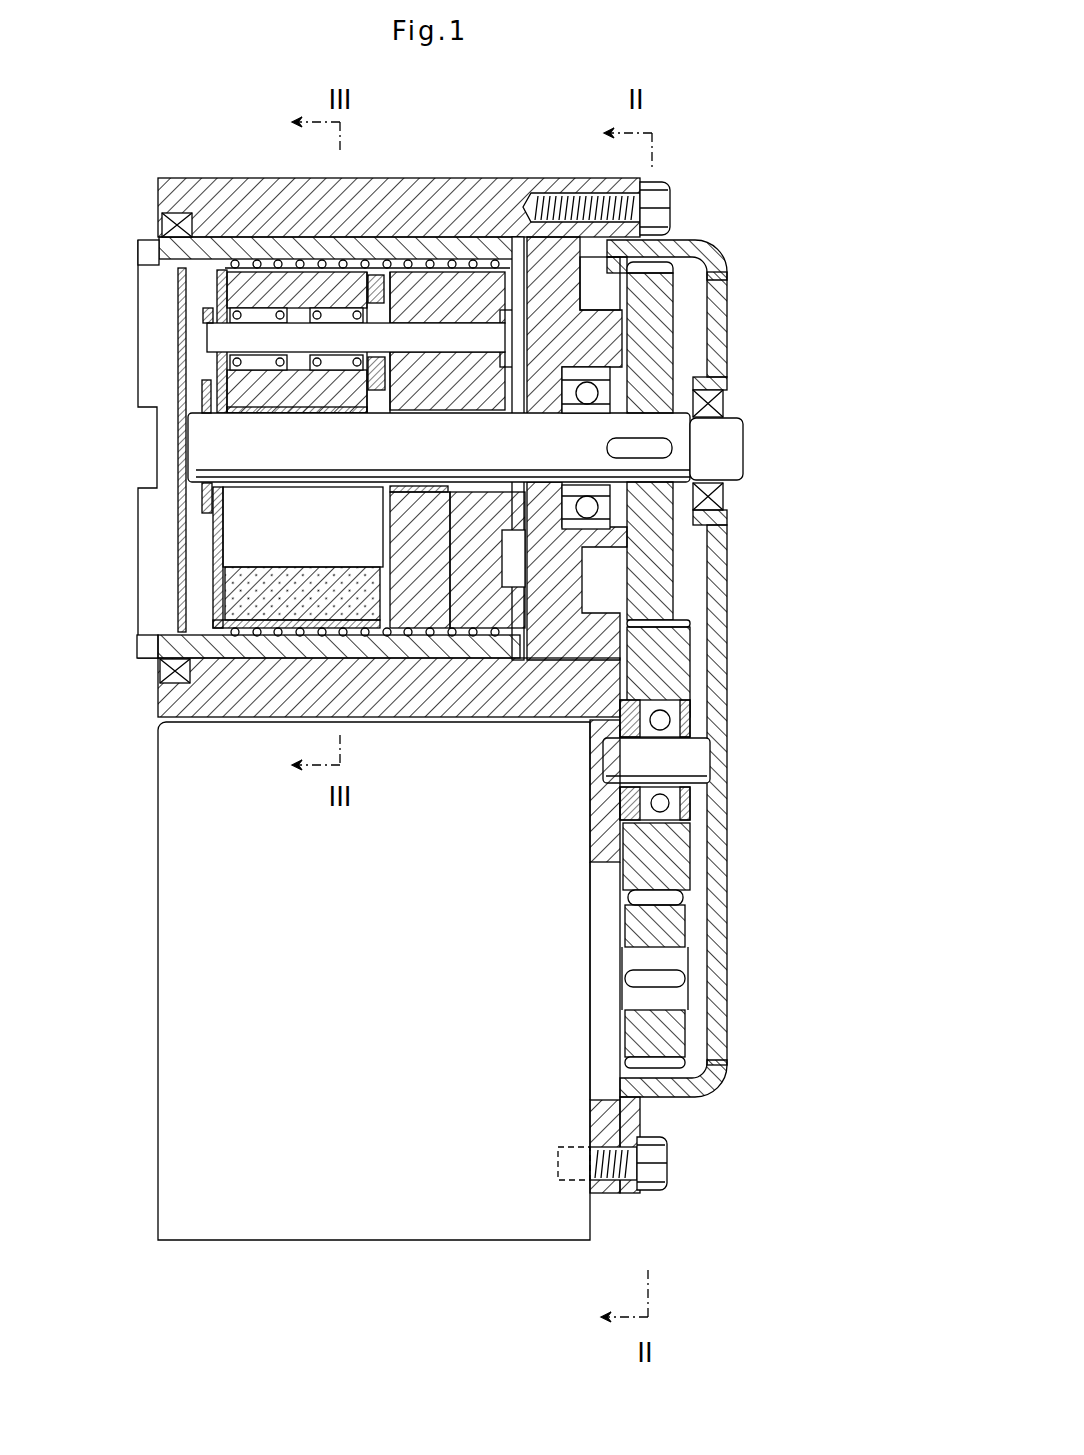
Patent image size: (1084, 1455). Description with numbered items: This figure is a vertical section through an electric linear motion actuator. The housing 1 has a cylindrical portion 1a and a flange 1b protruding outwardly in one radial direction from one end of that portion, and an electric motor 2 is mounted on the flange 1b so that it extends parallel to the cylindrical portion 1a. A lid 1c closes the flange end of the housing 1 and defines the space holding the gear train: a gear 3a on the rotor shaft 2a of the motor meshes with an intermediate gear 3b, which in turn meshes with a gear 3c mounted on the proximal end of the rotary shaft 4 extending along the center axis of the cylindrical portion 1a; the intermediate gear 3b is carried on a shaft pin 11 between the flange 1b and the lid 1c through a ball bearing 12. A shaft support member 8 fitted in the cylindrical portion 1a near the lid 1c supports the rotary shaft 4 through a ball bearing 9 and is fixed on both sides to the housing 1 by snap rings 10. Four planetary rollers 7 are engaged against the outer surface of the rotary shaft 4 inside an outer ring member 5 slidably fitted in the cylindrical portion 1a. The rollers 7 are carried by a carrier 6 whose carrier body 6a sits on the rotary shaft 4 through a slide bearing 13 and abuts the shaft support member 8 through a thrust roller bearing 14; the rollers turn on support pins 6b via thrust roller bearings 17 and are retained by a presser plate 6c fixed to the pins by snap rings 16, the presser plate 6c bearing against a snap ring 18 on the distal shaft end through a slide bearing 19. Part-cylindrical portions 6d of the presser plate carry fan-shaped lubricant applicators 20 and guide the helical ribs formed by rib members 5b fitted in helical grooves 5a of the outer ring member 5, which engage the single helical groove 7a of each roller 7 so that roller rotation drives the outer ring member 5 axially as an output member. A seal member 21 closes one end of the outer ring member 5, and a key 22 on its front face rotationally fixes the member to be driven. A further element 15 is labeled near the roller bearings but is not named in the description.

The housing 1 is at (208, 176).
The cylindrical portion 1a is at (183, 703).
The flange 1b is at (607, 828).
The lid 1c is at (715, 895).
The electric motor 2 is at (183, 1110).
The rotor shaft 2a is at (677, 963).
The gear 3a is at (668, 1035).
The intermediate gear 3b is at (660, 668).
The gear 3c is at (662, 572).
The rotary shaft 4 is at (718, 440).
The outer ring member 5 is at (205, 240).
The helical grooves 5a is at (266, 260).
The rib members 5b is at (282, 260).
The carrier 6 is at (466, 600).
The carrier body 6a is at (432, 590).
The support pins 6b is at (437, 333).
The presser plate 6c is at (226, 638).
The part-cylindrical portions 6d is at (290, 628).
The planetary rollers 7 is at (247, 274).
The helical groove 7a is at (333, 412).
The shaft support member 8 is at (663, 313).
The ball bearing 9 is at (600, 372).
The snap rings 10 is at (565, 195).
The shaft pin 11 is at (690, 762).
The ball bearing 12 is at (693, 710).
The slide bearing 13 is at (425, 592).
The thrust roller bearing 14 is at (519, 240).
The small bearing 15 is at (308, 372).
The snap rings 16 is at (215, 313).
The thrust roller bearings 17 is at (382, 270).
The snap ring 18 is at (200, 497).
The slide bearing 19 is at (212, 370).
The lubricant applicators 20 is at (260, 600).
The seal member 21 is at (180, 587).
The key 22 is at (150, 252).